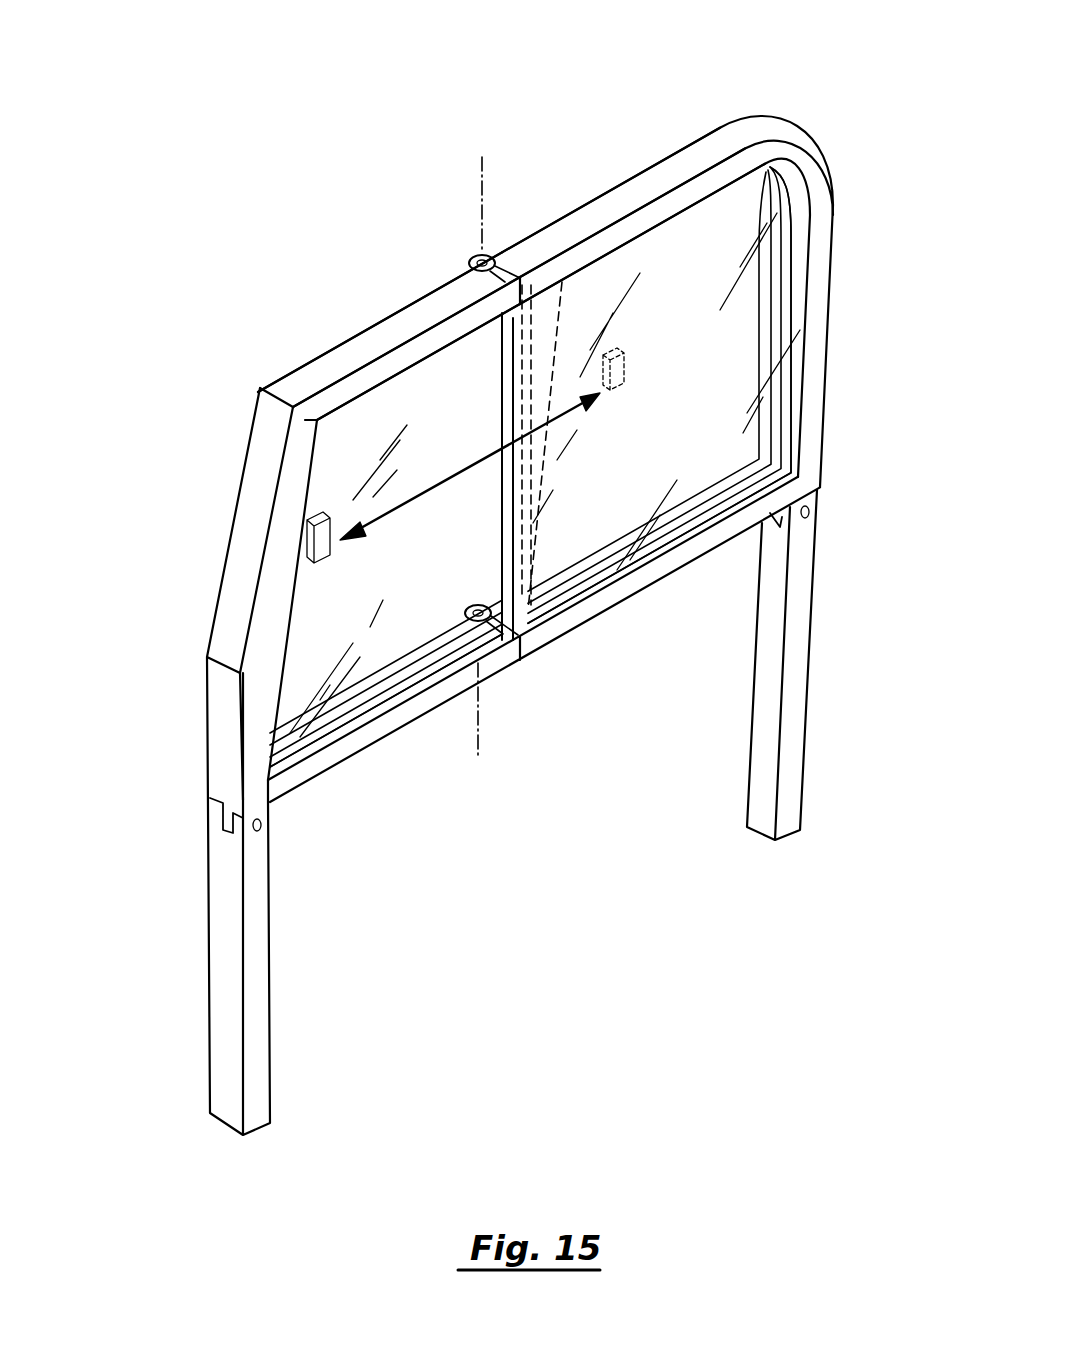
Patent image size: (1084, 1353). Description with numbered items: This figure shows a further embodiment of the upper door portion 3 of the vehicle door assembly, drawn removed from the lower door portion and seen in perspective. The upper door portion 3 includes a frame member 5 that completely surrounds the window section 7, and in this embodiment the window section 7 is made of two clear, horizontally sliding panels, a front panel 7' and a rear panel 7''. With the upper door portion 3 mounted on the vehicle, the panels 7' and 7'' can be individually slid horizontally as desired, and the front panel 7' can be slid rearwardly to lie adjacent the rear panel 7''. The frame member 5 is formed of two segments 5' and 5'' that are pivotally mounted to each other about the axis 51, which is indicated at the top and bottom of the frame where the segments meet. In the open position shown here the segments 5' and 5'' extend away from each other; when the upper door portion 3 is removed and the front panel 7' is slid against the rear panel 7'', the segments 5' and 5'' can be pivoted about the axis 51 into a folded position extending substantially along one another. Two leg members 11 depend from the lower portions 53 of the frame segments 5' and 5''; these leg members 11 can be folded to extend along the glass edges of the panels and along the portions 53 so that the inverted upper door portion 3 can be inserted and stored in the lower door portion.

The upper door portion 3 is at (243, 380).
The frame member 5 is at (545, 214).
The frame segment 5' is at (389, 327).
The frame segment 5'' is at (633, 180).
The window section 7 is at (602, 467).
The front panel 7' is at (386, 596).
The rear panel 7'' is at (661, 395).
The leg members 11 is at (763, 737).
The axis 51 is at (478, 188).
The portions of the frame segments 53 is at (658, 570).